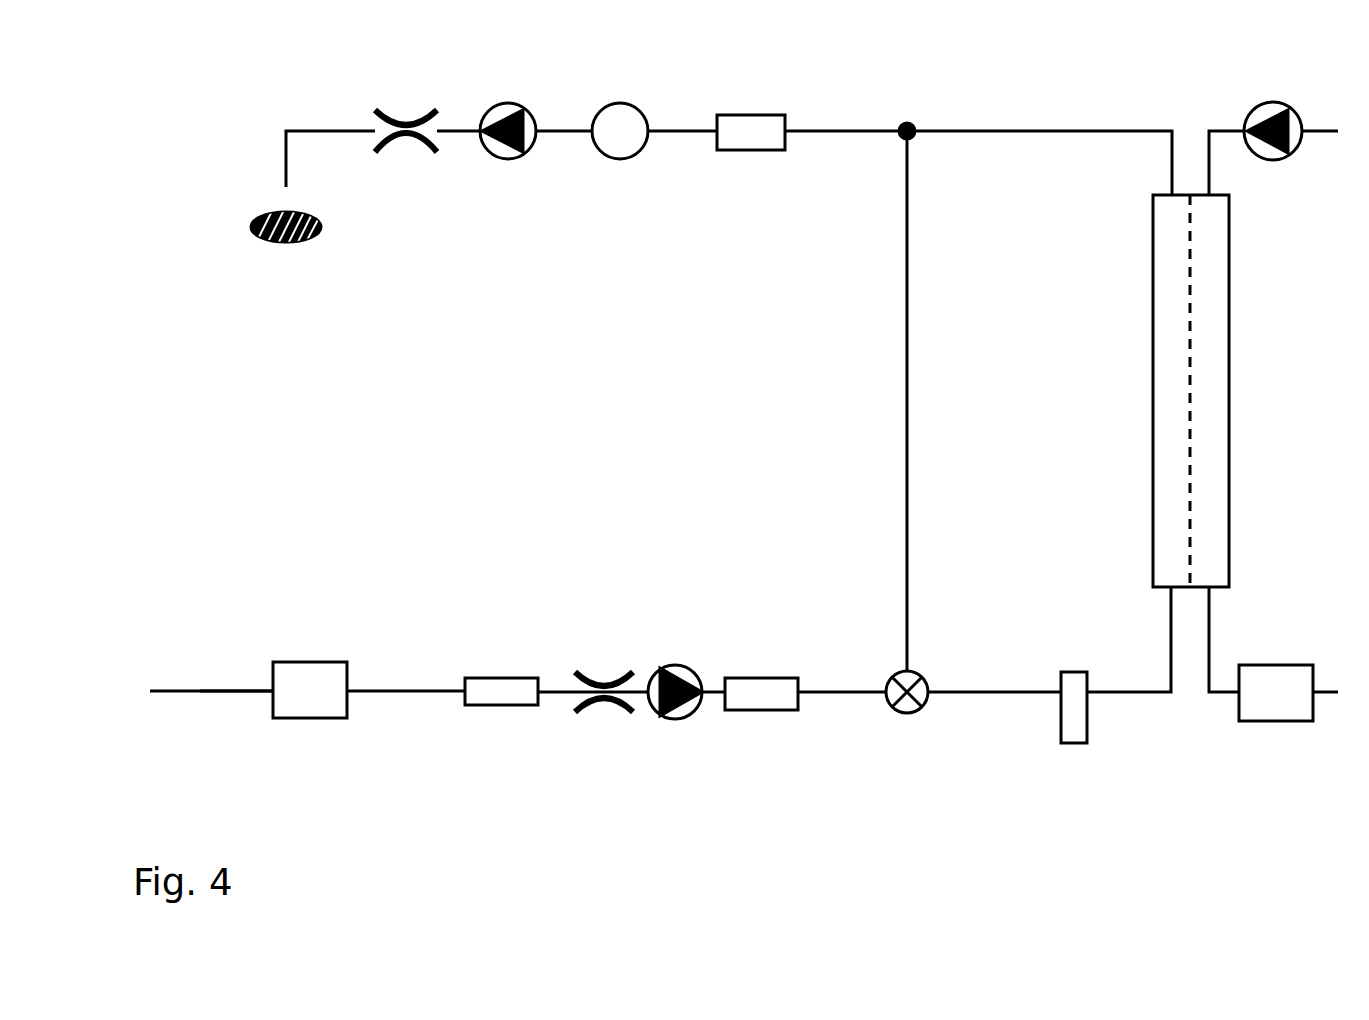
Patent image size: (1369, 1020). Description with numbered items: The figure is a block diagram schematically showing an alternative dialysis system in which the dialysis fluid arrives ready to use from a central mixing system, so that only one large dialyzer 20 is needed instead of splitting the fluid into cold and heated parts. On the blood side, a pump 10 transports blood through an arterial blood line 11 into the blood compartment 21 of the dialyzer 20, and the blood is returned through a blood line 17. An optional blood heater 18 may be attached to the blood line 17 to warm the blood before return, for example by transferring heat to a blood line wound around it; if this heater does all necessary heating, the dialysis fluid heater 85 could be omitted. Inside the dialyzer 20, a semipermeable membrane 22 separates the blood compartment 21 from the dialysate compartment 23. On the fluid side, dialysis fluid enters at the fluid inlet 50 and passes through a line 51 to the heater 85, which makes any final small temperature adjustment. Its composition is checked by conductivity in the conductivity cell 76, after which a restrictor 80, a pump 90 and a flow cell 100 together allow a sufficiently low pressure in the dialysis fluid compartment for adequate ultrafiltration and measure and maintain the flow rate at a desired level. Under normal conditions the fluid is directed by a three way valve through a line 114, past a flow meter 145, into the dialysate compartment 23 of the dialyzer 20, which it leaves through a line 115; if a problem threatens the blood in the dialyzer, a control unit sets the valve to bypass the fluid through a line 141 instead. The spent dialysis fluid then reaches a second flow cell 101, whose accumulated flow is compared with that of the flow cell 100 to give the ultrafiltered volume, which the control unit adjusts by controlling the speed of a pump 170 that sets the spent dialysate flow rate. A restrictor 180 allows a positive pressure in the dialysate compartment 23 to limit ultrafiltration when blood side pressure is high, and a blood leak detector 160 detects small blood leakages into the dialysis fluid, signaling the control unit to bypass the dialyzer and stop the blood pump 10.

The pump 10 is at (1297, 116).
The arterial blood line 11 is at (1225, 128).
The blood line 17 is at (1210, 645).
The blood heater 18 is at (1271, 722).
The dialyzer 20 is at (1229, 243).
The blood compartment 21 is at (1212, 373).
The semipermeable membrane 22 is at (1191, 518).
The dialysate compartment 23 is at (1160, 338).
The fluid inlet 50 is at (150, 691).
The line 51 is at (250, 692).
The conductivity cell 76 is at (504, 705).
The restrictor 80 is at (605, 700).
The heater 85 is at (315, 718).
The pump 90 is at (675, 720).
The flow cell 100 is at (755, 710).
The second flow cell 101 is at (750, 150).
The line 114 is at (997, 695).
The line 115 is at (990, 130).
The line 141 is at (907, 385).
The flow meter 145 is at (1073, 745).
The blood leak detector 160 is at (620, 159).
The pump 170 is at (508, 159).
The restrictor 180 is at (405, 140).